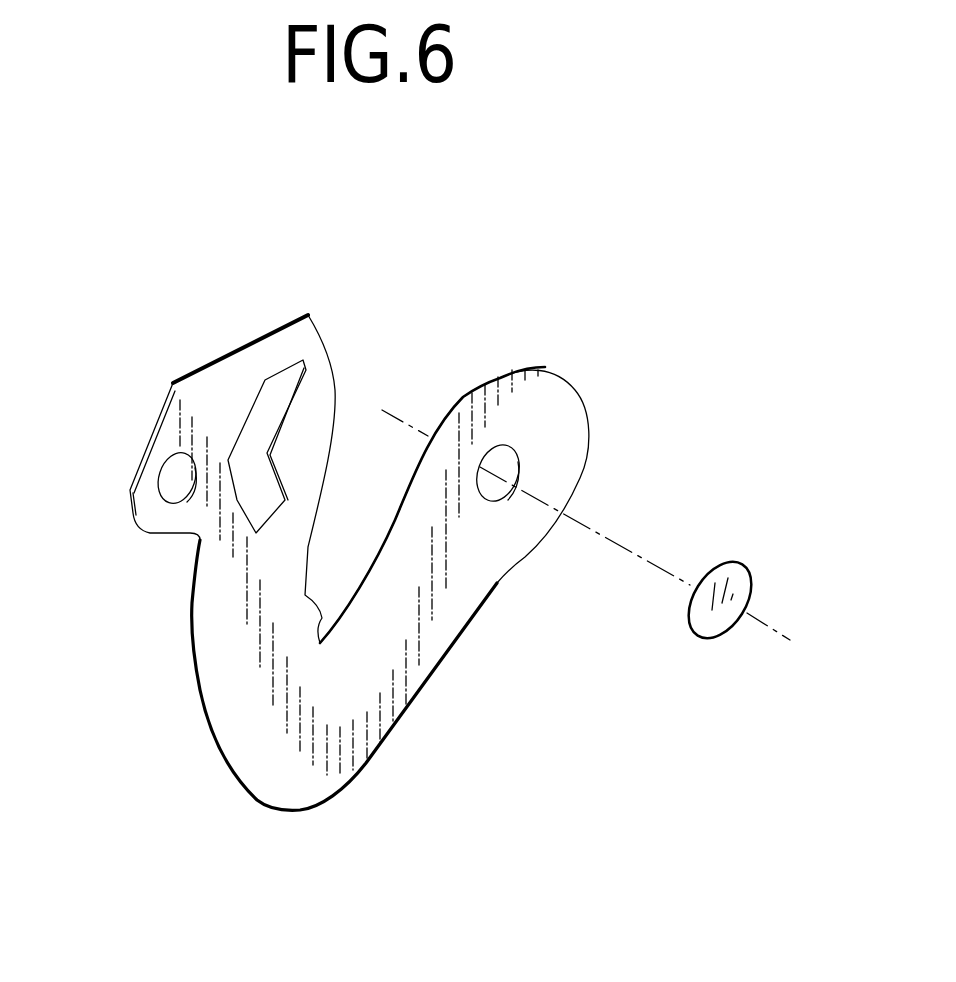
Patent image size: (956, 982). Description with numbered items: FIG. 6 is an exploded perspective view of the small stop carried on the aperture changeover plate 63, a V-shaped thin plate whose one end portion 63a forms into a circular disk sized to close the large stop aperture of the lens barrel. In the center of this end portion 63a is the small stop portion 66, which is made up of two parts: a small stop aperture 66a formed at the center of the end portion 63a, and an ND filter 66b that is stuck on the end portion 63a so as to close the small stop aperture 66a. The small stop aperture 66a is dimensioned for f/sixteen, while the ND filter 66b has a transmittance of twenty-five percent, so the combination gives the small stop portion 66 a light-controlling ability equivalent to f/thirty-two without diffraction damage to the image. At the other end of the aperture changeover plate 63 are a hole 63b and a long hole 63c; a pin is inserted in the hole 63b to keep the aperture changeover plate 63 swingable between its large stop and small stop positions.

The aperture changeover plate 63 is at (236, 823).
The end portion 63a is at (520, 523).
The hole 63b is at (160, 490).
The long hole 63c is at (273, 363).
The small stop portion 66 is at (800, 342).
The small stop aperture 66a is at (520, 450).
The ND filter 66b is at (722, 560).